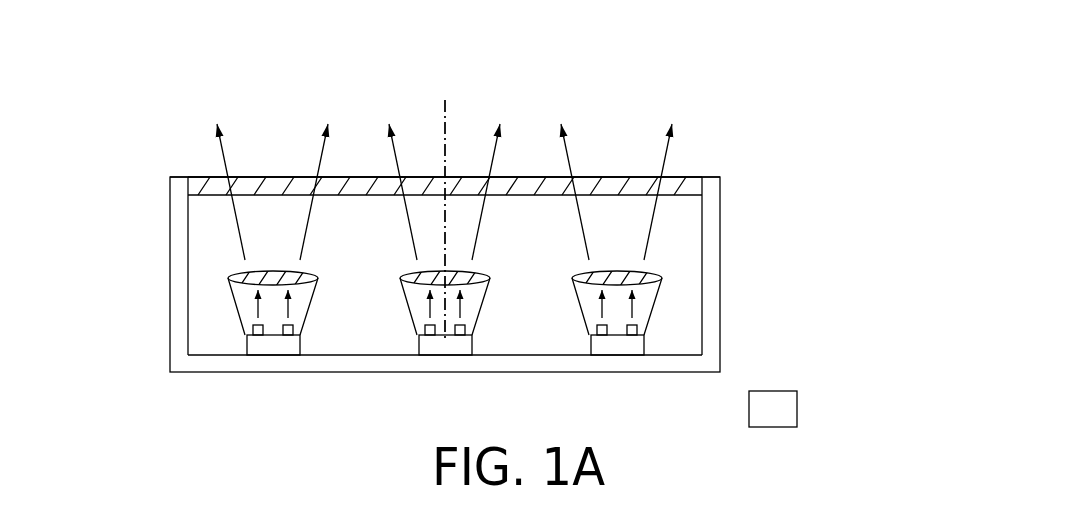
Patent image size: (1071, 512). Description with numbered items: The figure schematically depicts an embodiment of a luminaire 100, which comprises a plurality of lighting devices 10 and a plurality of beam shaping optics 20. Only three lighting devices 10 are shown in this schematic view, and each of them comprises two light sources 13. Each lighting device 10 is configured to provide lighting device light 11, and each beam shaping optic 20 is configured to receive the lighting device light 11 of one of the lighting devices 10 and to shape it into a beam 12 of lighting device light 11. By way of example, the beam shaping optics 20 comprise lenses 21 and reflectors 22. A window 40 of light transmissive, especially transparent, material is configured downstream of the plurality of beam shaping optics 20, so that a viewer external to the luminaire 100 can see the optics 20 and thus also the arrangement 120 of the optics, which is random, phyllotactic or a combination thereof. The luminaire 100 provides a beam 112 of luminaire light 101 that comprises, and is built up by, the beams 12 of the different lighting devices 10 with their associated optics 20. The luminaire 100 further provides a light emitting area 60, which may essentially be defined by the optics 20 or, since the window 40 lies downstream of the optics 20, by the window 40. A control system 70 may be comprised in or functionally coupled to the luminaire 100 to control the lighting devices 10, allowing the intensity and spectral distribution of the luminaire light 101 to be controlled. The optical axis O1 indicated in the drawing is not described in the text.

The luminaire 100 is at (140, 175).
The lighting device 10 is at (240, 343).
The lighting device light 11 is at (250, 215).
The beam of lighting device light 12 is at (637, 220).
The light source 13 is at (288, 335).
The beam shaping optics 20 is at (400, 293).
The lens 21 is at (275, 270).
The reflector 22 is at (235, 292).
The window 40 is at (527, 167).
The light emitting area 60 is at (704, 105).
The control system 70 is at (808, 412).
The luminaire light 101 is at (625, 165).
The beam of luminaire light 112 is at (718, 124).
The arrangement 120 is at (680, 340).
The first optical axis O1 is at (447, 118).